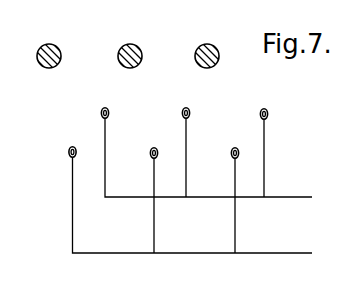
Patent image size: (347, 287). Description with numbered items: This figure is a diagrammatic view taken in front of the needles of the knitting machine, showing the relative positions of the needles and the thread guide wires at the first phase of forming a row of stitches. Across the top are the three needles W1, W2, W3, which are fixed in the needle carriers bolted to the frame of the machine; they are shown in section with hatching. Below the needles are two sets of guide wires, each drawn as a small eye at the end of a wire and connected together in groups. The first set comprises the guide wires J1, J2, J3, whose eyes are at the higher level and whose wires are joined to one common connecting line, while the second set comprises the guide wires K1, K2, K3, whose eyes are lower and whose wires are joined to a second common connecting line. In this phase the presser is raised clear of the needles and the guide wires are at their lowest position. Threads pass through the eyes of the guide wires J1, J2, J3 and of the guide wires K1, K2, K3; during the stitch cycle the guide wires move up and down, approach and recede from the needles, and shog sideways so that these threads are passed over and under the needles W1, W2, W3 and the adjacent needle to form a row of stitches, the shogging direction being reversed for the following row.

The needle W1 is at (51, 48).
The needle W2 is at (132, 48).
The needle W3 is at (209, 48).
The guide wire J1 is at (206, 142).
The guide wire J2 is at (196, 142).
The guide wire J3 is at (273, 142).
The guide wire K1 is at (190, 192).
The guide wire K2 is at (164, 192).
The guide wire K3 is at (245, 192).